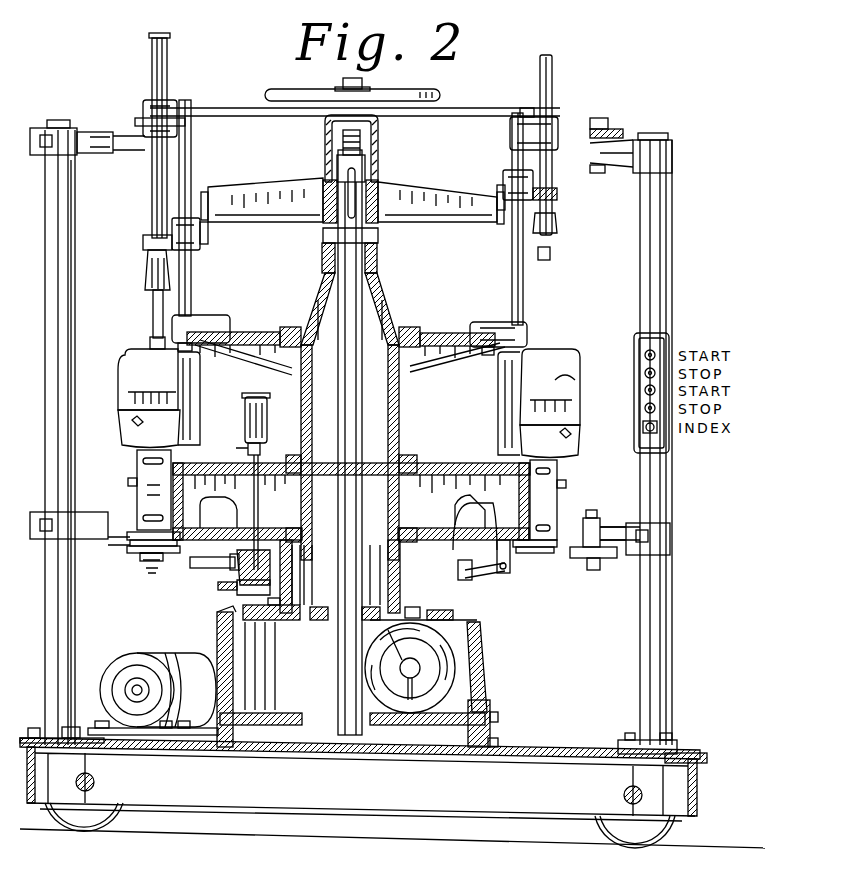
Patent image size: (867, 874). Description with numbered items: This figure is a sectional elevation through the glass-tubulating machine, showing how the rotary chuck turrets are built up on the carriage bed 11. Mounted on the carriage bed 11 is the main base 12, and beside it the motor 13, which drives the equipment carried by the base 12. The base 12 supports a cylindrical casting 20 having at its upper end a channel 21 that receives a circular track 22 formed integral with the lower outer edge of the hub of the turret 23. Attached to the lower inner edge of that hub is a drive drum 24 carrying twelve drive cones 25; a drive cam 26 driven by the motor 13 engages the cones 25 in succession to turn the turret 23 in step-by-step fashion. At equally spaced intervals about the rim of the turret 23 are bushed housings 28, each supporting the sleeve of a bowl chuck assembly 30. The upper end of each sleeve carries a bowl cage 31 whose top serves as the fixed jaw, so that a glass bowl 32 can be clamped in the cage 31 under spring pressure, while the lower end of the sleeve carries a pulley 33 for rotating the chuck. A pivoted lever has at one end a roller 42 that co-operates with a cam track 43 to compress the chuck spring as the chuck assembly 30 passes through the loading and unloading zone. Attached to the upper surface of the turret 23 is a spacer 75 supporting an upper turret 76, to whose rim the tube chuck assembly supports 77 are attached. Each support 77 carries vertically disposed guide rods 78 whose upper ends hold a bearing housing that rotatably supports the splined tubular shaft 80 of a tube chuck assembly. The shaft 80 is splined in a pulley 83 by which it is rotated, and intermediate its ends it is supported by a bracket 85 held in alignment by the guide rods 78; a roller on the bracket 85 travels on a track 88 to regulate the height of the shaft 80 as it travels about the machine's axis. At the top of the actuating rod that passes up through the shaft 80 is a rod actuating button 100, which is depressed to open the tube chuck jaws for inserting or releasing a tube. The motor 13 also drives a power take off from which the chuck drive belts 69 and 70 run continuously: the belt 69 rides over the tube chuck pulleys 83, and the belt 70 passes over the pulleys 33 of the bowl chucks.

The carriage bed 11 is at (562, 748).
The main base 12 is at (485, 695).
The motor 13 is at (190, 650).
The cylindrical casting 20 is at (245, 607).
The channel 21 is at (449, 576).
The circular track 22 is at (240, 560).
The turret 23 is at (442, 465).
The drive drum 24 is at (301, 625).
The drive cones 25 is at (270, 630).
The drive cam 26 is at (450, 672).
The bushed housings 28 is at (145, 497).
The chuck assembly 30 is at (130, 430).
The bowl cage 31 is at (188, 380).
The bowl 32 is at (568, 378).
The pulley 33 is at (130, 565).
The roller 42 is at (228, 573).
The cam track 43 is at (220, 592).
The chuck drive belt 69 is at (558, 128).
The chuck drive belt 70 is at (566, 562).
The spacer 75 is at (400, 417).
The turret 76 is at (412, 362).
The tube chuck assembly supports 77 is at (491, 322).
The guide rods 78 is at (524, 306).
The splined tubular shaft 80 is at (553, 72).
The pulley 83 is at (146, 110).
The bracket 85 is at (560, 200).
The track 88 is at (195, 249).
The rod actuating button 100 is at (150, 36).